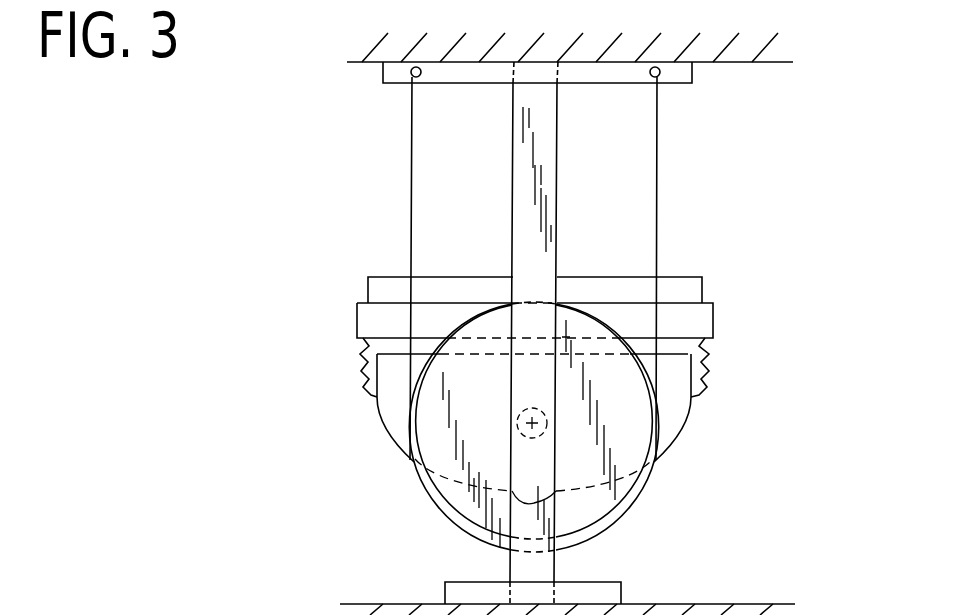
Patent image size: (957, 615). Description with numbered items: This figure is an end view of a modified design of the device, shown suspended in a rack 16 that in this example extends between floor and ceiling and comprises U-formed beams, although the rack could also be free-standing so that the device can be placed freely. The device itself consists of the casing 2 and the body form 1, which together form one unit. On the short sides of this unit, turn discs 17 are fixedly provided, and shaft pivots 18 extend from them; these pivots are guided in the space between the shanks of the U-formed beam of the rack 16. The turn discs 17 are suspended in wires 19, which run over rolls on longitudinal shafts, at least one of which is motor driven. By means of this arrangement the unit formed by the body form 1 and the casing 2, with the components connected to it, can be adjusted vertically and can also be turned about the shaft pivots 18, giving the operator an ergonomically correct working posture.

The body form 1 is at (667, 425).
The casing 2 is at (713, 315).
The rack 16 is at (541, 182).
The turn disc 17 is at (585, 508).
The shaft pivot 18 is at (522, 432).
The wire 19 is at (657, 237).